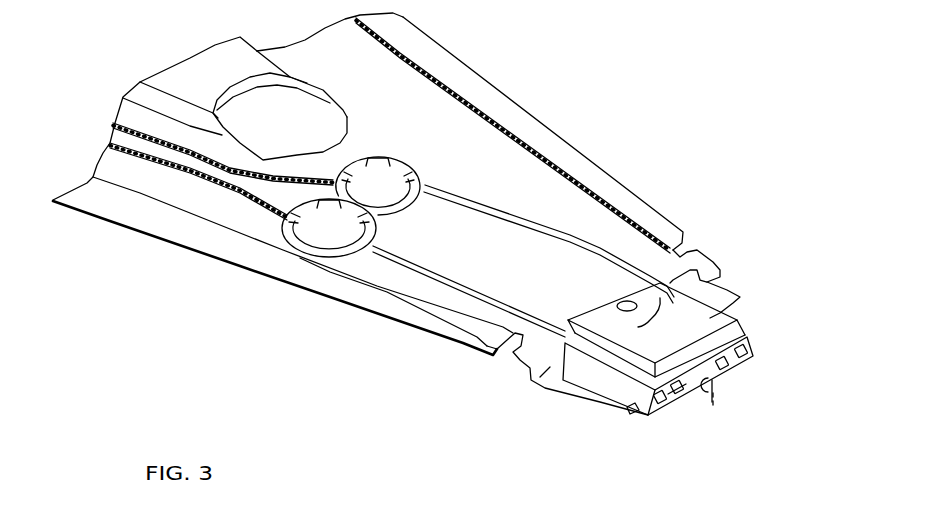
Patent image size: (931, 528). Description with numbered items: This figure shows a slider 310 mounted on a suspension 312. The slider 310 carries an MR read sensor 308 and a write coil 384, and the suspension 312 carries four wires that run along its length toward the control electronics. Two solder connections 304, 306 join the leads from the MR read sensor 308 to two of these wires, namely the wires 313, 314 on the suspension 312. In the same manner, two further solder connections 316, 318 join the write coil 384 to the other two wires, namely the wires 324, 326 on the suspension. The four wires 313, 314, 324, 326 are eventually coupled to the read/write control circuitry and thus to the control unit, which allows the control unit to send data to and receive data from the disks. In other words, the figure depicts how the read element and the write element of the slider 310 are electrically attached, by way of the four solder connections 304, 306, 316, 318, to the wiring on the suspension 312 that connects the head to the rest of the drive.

The solder connection 304 is at (633, 417).
The solder connection 306 is at (747, 347).
The MR read sensor 308 is at (700, 403).
The slider 310 is at (585, 400).
The suspension 312 is at (548, 110).
The wire 313 is at (394, 272).
The wire 314 is at (602, 247).
The solder connection 316 is at (681, 400).
The solder connection 318 is at (720, 367).
The wire 324 is at (450, 280).
The wire 326 is at (517, 224).
The write coil 384 is at (713, 405).